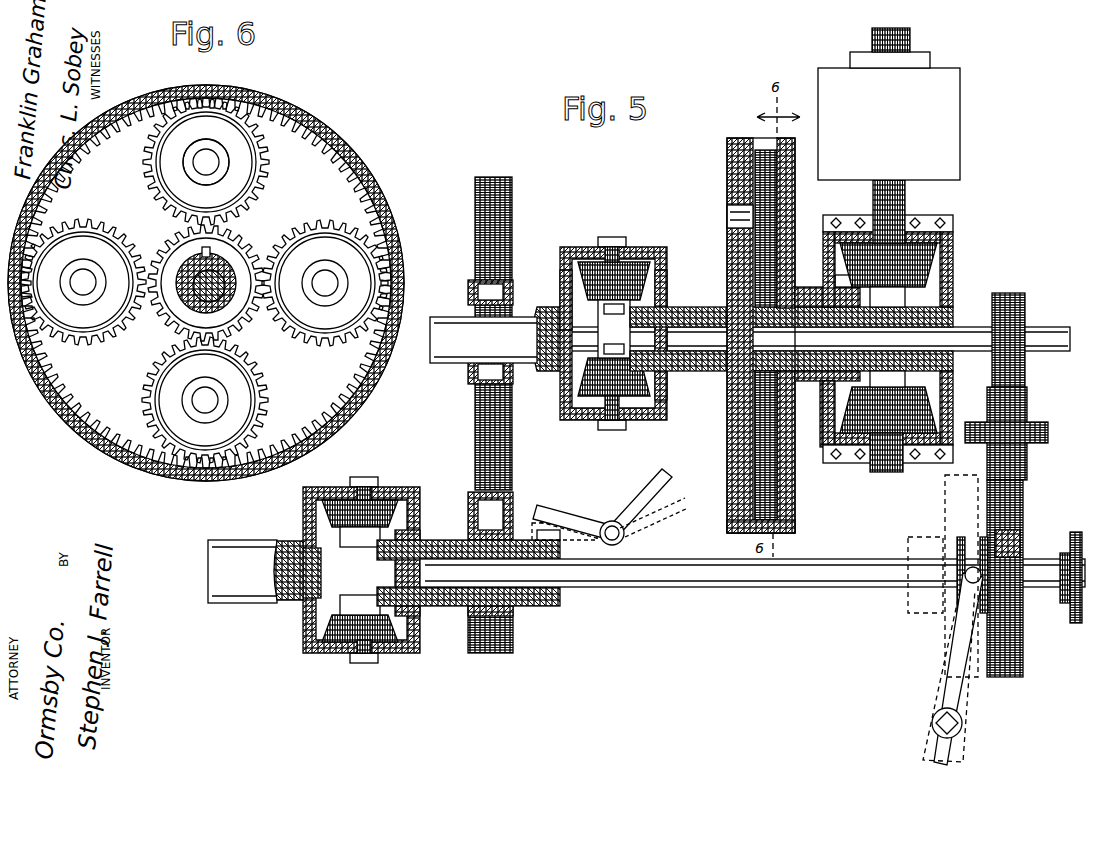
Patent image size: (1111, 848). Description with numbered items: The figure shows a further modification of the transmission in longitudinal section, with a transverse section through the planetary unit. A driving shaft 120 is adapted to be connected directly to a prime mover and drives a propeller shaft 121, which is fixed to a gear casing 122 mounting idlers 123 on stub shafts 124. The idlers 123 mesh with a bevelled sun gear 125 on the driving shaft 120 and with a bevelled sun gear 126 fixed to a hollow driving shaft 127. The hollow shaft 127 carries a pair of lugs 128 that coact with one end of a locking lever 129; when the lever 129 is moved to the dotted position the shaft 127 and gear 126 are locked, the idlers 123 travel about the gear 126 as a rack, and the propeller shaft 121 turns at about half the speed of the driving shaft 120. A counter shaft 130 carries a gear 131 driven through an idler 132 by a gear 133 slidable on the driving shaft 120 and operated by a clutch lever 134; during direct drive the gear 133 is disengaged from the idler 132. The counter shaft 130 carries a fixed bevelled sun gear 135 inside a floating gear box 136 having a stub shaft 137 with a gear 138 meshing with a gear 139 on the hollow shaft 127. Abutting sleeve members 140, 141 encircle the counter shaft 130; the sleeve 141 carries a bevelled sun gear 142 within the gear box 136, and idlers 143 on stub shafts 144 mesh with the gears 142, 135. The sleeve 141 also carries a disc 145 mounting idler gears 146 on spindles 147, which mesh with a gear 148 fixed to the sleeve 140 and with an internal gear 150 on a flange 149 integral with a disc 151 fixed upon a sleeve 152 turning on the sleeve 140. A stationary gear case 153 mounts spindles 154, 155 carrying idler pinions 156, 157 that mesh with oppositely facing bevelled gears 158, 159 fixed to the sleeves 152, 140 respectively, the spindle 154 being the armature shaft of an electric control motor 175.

In FIG. 5, the driving shaft 120 is at (795, 588).
In FIG. 5, the propeller shaft 121 is at (238, 600).
In FIG. 5, the gear casing 122 is at (420, 498).
In FIG. 5, the idlers 123 is at (398, 492).
In FIG. 5, the stub shafts 124 is at (364, 477).
In FIG. 5, the bevelled sun gear 125 is at (303, 630).
In FIG. 5, the bevelled sun gear 126 is at (420, 520).
In FIG. 5, the hollow driving shaft 127 is at (540, 607).
In FIG. 5, the lugs 128 is at (560, 538).
In FIG. 5, the locking lever 129 is at (605, 522).
In FIG. 6, the counter shaft 130 is at (240, 311).
In FIG. 5, the counter shaft 130 is at (966, 320).
In FIG. 5, the gear 131 is at (1010, 293).
In FIG. 5, the idler 132 is at (1030, 418).
In FIG. 5, the gear 133 is at (1025, 520).
In FIG. 5, the clutch lever 134 is at (947, 640).
In FIG. 5, the bevelled sun gear 135 is at (560, 285).
In FIG. 5, the floating gear box 136 is at (578, 247).
In FIG. 5, the stub shaft 137 is at (533, 365).
In FIG. 5, the gear 138 is at (512, 225).
In FIG. 5, the gear 139 is at (512, 650).
In FIG. 6, the sleeve member 140 is at (181, 296).
In FIG. 5, the sleeve member 140 is at (893, 302).
In FIG. 5, the sleeve member 141 is at (703, 310).
In FIG. 5, the bevelled sun gear 142 is at (670, 278).
In FIG. 5, the idlers 143 is at (640, 262).
In FIG. 5, the stub shafts 144 is at (612, 240).
In FIG. 5, the disc 145 is at (727, 180).
In FIG. 6, the idler gears 146 is at (204, 281).
In FIG. 5, the idler gears 146 is at (780, 212).
In FIG. 6, the spindles 147 is at (206, 172).
In FIG. 5, the spindles 147 is at (727, 215).
In FIG. 6, the gear 148 is at (215, 275).
In FIG. 5, the gear 148 is at (782, 270).
In FIG. 6, the flange 149 is at (206, 283).
In FIG. 5, the flange 149 is at (793, 527).
In FIG. 6, the internal gear 150 is at (206, 283).
In FIG. 5, the internal gear 150 is at (775, 510).
In FIG. 5, the disc 151 is at (778, 470).
In FIG. 5, the sleeve 152 is at (826, 382).
In FIG. 5, the stationary gear case 153 is at (953, 250).
In FIG. 5, the spindle 154 is at (905, 195).
In FIG. 5, the spindle 155 is at (887, 472).
In FIG. 5, the idler pinion 156 is at (953, 225).
In FIG. 5, the idler pinion 157 is at (915, 463).
In FIG. 5, the bevelled gear 158 is at (850, 280).
In FIG. 5, the bevelled gear 159 is at (953, 392).
In FIG. 5, the electric motor 175 is at (960, 130).